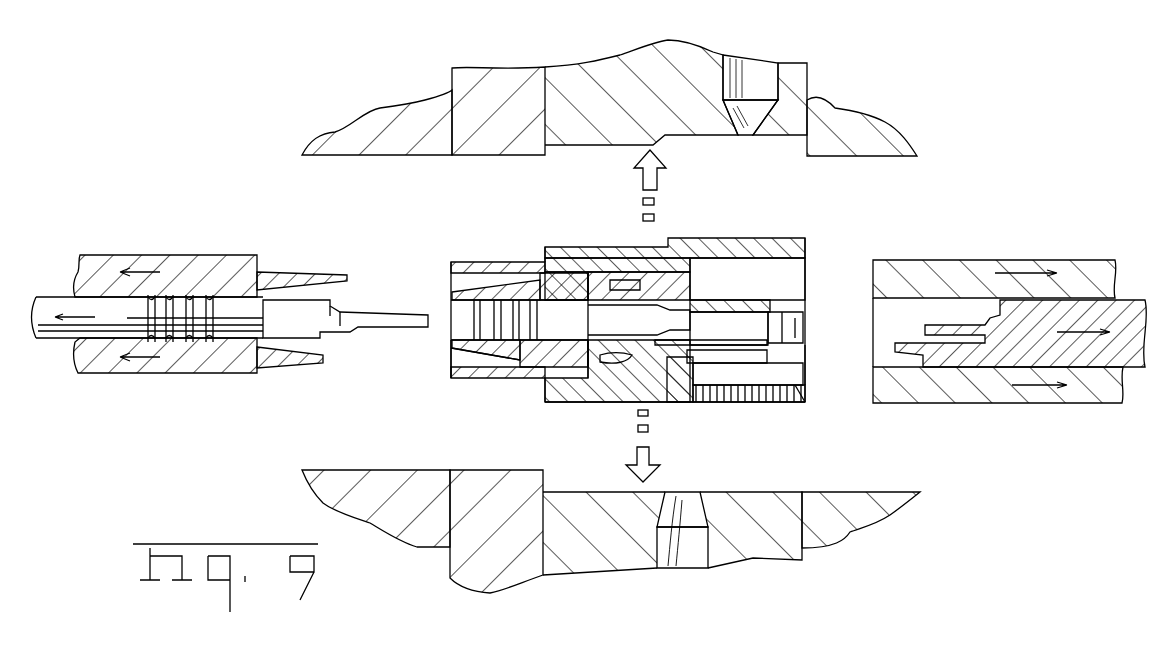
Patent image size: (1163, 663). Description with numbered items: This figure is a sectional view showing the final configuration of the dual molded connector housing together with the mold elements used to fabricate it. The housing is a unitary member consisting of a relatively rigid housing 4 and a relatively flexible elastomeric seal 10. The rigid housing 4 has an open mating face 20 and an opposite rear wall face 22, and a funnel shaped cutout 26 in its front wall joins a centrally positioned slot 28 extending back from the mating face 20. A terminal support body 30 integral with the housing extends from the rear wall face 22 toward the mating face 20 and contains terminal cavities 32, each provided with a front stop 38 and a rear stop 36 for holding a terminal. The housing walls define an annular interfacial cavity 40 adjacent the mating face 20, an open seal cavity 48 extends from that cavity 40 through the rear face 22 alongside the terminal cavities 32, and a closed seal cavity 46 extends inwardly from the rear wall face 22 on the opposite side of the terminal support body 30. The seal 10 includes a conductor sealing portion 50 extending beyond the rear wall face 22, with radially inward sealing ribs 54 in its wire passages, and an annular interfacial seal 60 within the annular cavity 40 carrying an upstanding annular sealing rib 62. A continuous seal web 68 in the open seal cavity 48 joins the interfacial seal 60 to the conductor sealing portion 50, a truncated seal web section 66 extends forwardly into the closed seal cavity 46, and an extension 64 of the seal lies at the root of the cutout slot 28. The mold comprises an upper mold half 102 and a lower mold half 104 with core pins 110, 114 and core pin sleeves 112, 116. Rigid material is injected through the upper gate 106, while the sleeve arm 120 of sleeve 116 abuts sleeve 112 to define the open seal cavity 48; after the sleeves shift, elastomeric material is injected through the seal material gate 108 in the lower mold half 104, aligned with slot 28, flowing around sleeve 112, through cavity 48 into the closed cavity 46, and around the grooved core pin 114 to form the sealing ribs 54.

The relatively rigid housing 4 is at (809, 240).
The relatively flexible seal 10 is at (481, 249).
The mating face 20 is at (808, 372).
The rear wall face 22 is at (545, 390).
The funnel shaped cutout 26 is at (798, 400).
The slot 28 is at (740, 405).
The terminal support body 30 is at (752, 305).
The terminal cavities 32 is at (740, 345).
The rear stop 36 is at (688, 308).
The front stop 38 is at (770, 302).
The annular interfacial cavity 40 is at (775, 270).
The closed seal cavity 46 is at (597, 362).
The open seal cavity 48 is at (615, 275).
The conductor sealing portion 50 is at (451, 348).
The sealing ribs 54 is at (508, 318).
The interfacial seal 60 is at (685, 258).
The annular sealing rib 62 is at (700, 372).
The extension 64 is at (676, 398).
The truncated seal web section 66 is at (590, 368).
The intermediate seal web 68 is at (643, 258).
The upper mold half 102 is at (722, 44).
The lower mold half 104 is at (744, 566).
The upper gate 106 is at (755, 125).
The seal material gate 108 is at (680, 527).
The core pin 110 is at (1005, 352).
The core pin sleeve 112 is at (1025, 262).
The core pin 114 is at (85, 325).
The core pin sleeve 116 is at (182, 262).
The sleeve arm 120 is at (300, 272).